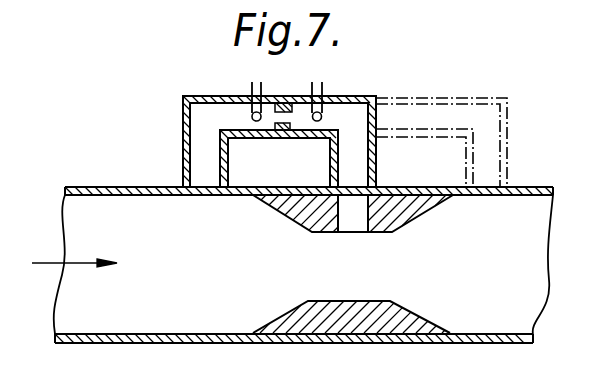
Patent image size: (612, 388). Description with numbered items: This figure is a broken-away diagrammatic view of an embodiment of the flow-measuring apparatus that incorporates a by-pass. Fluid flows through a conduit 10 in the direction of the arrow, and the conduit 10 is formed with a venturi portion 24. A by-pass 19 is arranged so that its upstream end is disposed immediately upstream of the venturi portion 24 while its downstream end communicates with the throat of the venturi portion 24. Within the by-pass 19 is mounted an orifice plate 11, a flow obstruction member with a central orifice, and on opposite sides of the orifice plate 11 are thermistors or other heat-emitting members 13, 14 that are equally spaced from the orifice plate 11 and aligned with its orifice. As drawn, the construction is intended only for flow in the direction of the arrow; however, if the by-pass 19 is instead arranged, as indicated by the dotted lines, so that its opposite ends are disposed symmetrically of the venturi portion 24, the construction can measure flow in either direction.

The conduit 10 is at (117, 187).
The orifice plate 11 is at (283, 101).
The heat-emitting member 13 is at (252, 116).
The heat-emitting member 14 is at (322, 117).
The by-pass 19 is at (351, 165).
The venturi portion 24 is at (416, 318).